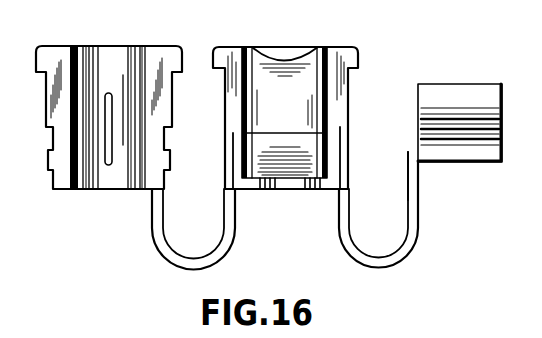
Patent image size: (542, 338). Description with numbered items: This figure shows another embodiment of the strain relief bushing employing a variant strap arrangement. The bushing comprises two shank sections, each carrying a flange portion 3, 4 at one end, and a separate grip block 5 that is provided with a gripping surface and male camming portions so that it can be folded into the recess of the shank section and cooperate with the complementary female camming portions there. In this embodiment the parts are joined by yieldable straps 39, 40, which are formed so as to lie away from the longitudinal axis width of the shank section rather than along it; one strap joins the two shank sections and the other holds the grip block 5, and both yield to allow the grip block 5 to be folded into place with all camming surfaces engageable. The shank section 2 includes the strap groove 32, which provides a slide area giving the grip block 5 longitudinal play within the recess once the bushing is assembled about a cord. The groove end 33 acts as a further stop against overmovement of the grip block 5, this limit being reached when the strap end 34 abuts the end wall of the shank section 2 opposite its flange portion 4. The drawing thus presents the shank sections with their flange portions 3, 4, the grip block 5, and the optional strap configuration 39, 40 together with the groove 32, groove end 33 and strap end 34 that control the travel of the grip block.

The shank section 2 is at (326, 112).
The flange portion 3 is at (52, 58).
The flange portion 4 is at (349, 57).
The grip block 5 is at (455, 151).
The strap groove 32 is at (330, 127).
The groove end 33 is at (334, 84).
The strap end 34 is at (409, 151).
The yieldable strap 39 is at (152, 238).
The yieldable strap 40 is at (395, 216).